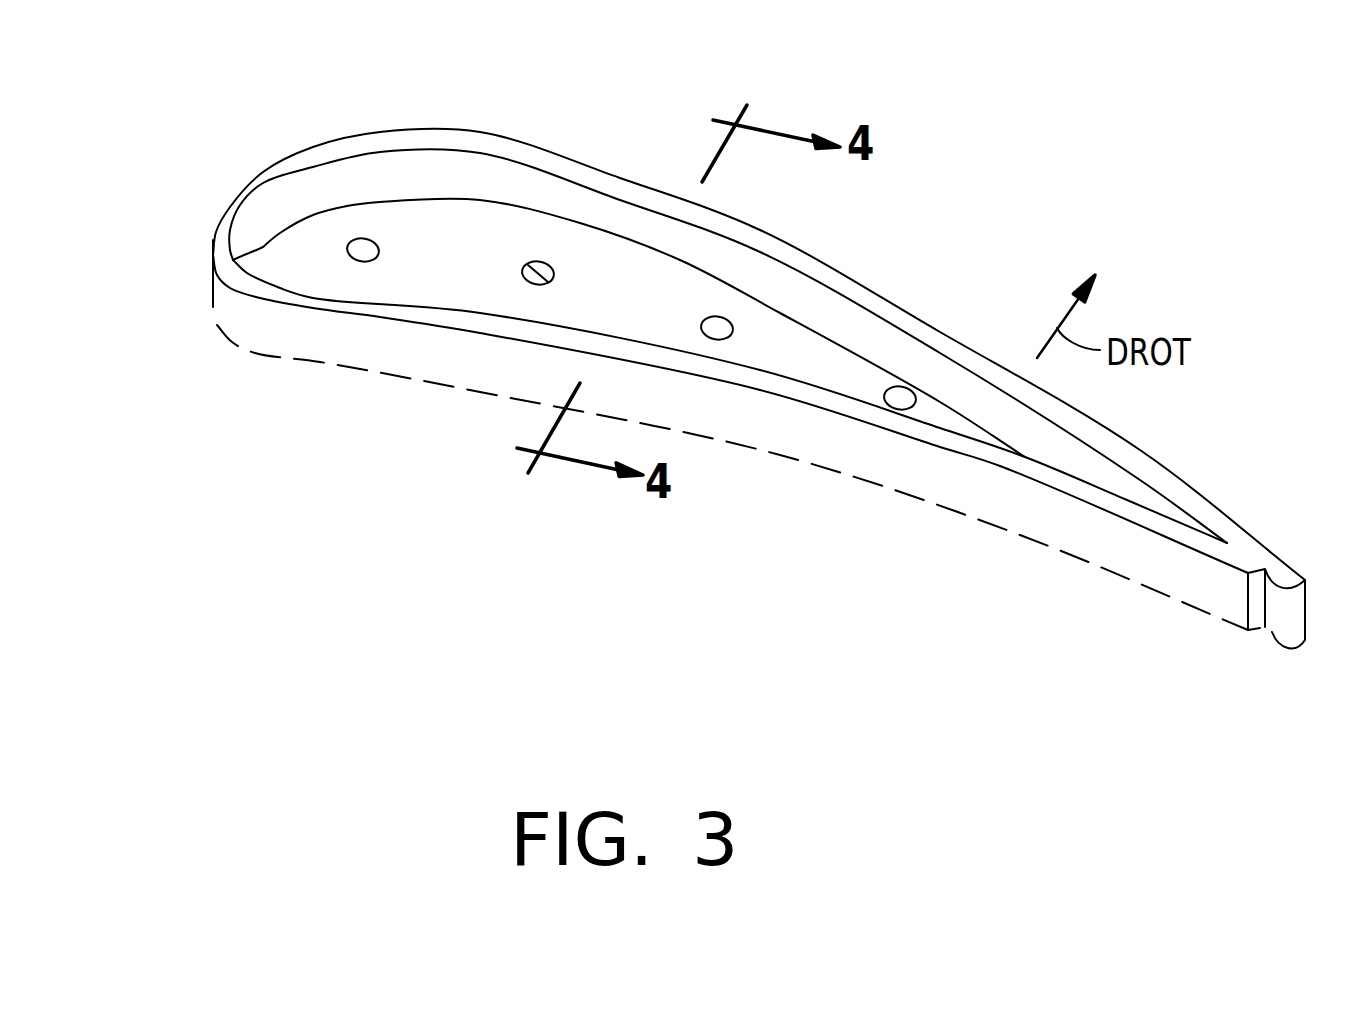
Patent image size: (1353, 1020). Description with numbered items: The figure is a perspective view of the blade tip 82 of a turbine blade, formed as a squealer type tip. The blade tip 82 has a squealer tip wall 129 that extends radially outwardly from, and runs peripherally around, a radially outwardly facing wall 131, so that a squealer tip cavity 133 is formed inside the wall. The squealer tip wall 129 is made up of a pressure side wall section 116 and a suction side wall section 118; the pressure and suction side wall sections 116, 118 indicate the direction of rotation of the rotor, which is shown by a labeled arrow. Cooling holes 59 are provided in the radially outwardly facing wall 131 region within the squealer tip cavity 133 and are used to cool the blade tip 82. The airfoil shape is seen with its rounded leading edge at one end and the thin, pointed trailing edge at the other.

The suction side wall section 118 is at (848, 278).
The squealer tip wall 129 is at (293, 155).
The pressure side wall section 116 is at (808, 437).
The radially outwardly facing wall 131 is at (855, 373).
The squealer tip cavity 133 is at (507, 197).
The cooling holes 59 is at (552, 279).
The blade tip 82 is at (223, 300).